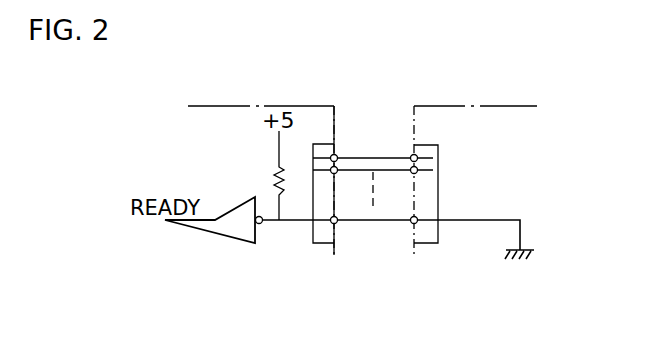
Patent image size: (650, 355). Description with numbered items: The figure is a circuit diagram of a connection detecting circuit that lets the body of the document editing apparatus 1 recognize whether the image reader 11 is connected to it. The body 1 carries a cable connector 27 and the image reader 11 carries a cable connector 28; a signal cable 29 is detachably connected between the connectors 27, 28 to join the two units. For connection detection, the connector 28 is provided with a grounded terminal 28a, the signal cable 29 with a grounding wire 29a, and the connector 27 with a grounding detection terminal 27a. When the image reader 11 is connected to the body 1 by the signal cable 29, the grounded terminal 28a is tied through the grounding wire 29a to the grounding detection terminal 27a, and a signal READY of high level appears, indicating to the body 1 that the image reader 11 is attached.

The body of the document editing apparatus 1 is at (215, 106).
The image reader 11 is at (507, 106).
The cable connector 27 is at (316, 246).
The grounding detection terminal 27a is at (337, 224).
The cable connector 28 is at (438, 246).
The grounded terminal 28a is at (411, 224).
The signal cable 29 is at (372, 158).
The grounding wire 29a is at (376, 224).